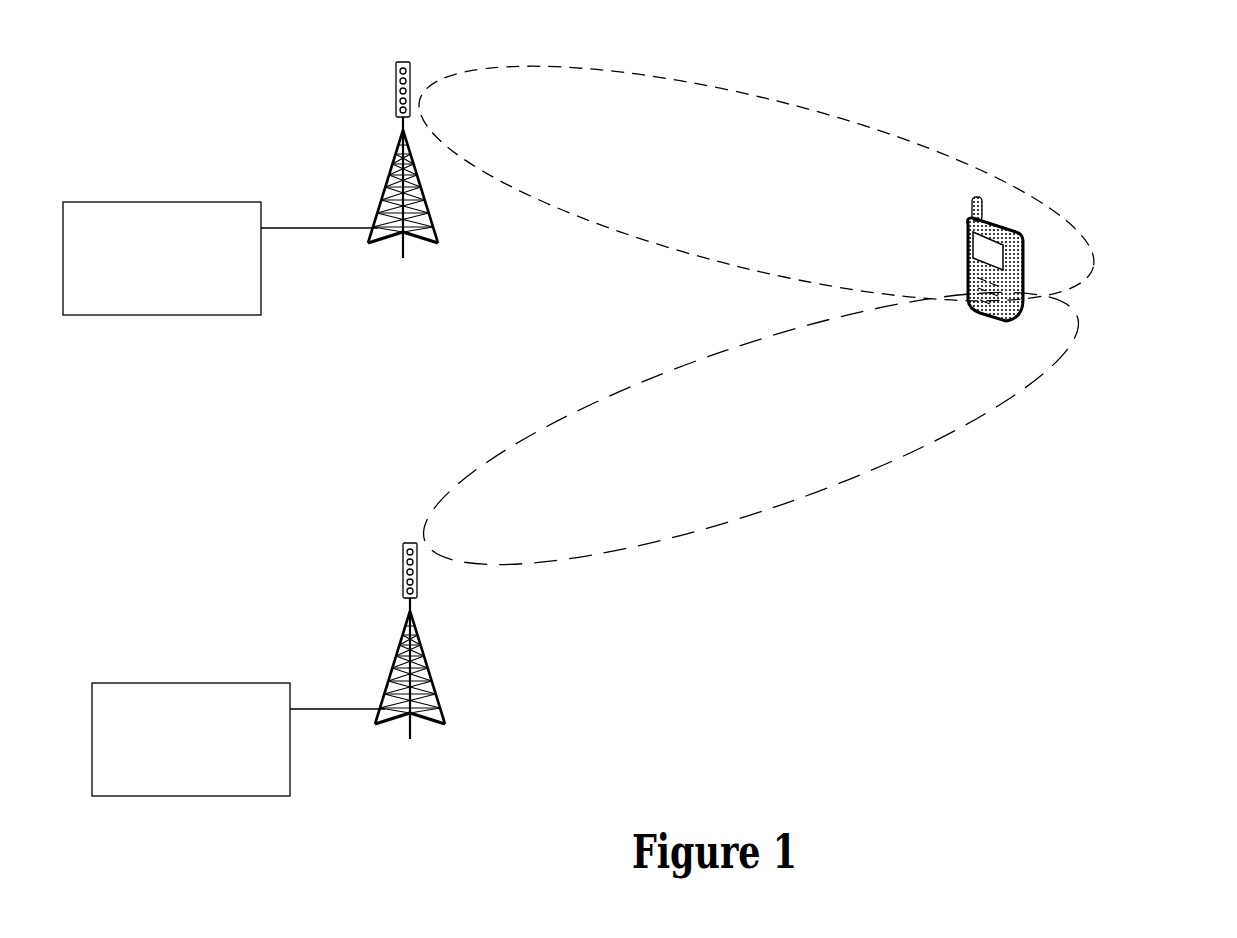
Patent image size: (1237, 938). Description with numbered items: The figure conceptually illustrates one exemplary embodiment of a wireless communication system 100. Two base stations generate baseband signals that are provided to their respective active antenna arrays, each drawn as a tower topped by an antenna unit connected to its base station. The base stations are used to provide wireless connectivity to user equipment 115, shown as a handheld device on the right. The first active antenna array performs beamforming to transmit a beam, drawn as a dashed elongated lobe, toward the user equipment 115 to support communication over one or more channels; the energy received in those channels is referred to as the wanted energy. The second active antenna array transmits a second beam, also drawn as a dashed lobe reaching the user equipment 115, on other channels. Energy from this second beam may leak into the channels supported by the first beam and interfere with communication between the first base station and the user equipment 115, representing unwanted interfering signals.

The wireless communication system 100 is at (1102, 52).
The user equipment 115 is at (1026, 251).